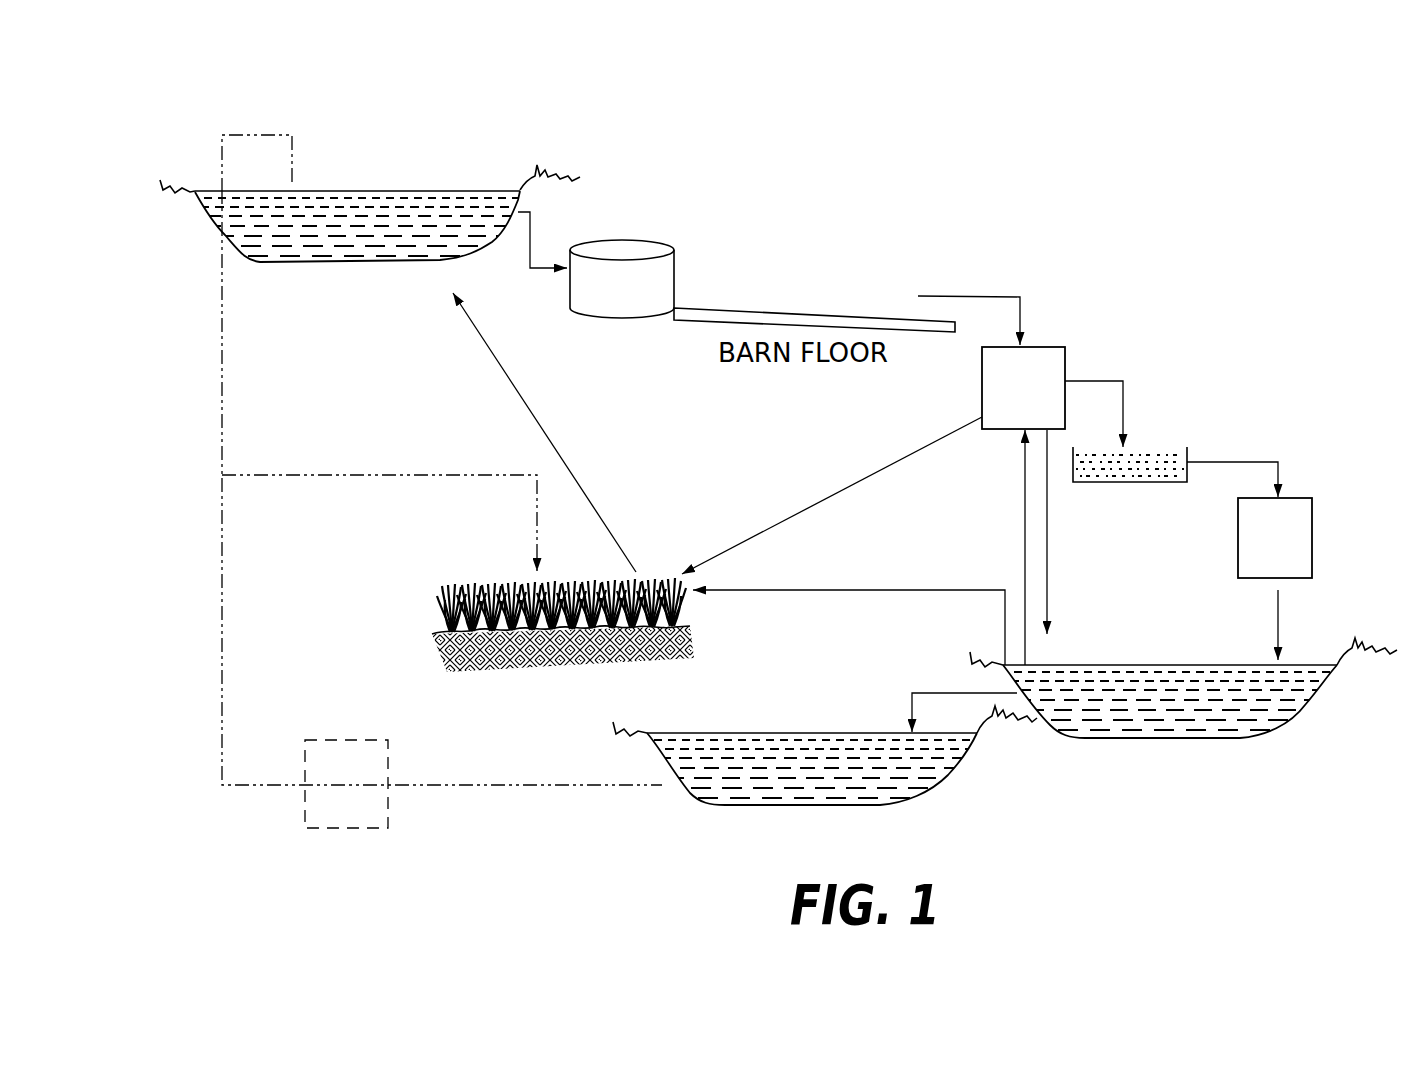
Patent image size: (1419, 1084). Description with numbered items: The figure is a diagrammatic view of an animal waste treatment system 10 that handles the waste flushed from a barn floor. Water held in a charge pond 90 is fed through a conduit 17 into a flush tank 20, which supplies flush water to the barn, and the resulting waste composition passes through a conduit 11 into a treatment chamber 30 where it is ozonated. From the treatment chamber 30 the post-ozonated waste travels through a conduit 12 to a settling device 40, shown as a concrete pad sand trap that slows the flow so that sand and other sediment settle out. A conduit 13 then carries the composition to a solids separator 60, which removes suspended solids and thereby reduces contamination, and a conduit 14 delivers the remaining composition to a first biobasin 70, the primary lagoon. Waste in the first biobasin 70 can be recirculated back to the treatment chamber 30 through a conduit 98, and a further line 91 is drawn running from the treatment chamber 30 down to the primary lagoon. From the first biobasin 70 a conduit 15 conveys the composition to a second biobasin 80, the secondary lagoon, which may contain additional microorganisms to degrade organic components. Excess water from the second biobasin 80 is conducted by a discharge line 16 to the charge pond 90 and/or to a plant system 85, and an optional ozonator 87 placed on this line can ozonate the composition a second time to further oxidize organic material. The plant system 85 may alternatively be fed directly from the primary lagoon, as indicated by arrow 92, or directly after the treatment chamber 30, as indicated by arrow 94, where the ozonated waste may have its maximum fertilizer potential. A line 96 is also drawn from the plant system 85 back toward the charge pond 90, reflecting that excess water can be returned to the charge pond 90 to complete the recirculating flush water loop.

The system 10 is at (225, 126).
The charge pond 90 is at (216, 217).
The conduit 17 is at (534, 215).
The flush tank 20 is at (570, 303).
The conduit 11 is at (970, 297).
The treatment chamber 30 is at (981, 392).
The conduit 12 is at (1108, 380).
The settling device 40 is at (1073, 463).
The conduit 13 is at (1249, 460).
The solids separator 60 is at (1238, 536).
The conduit 14 is at (1283, 605).
The first biobasin 70 is at (1325, 687).
The conduit 98 is at (1025, 537).
The line from collection pit to primary lagoon 91 is at (1048, 573).
The arrow 92 is at (838, 588).
The arrow 94 is at (831, 494).
The line from crop field to charge pond 96 is at (534, 410).
The plant system 85 is at (687, 610).
The discharge line 16 is at (224, 564).
The ozonator 87 is at (388, 803).
The conduit 15 is at (912, 697).
The second biobasin 80 is at (965, 767).